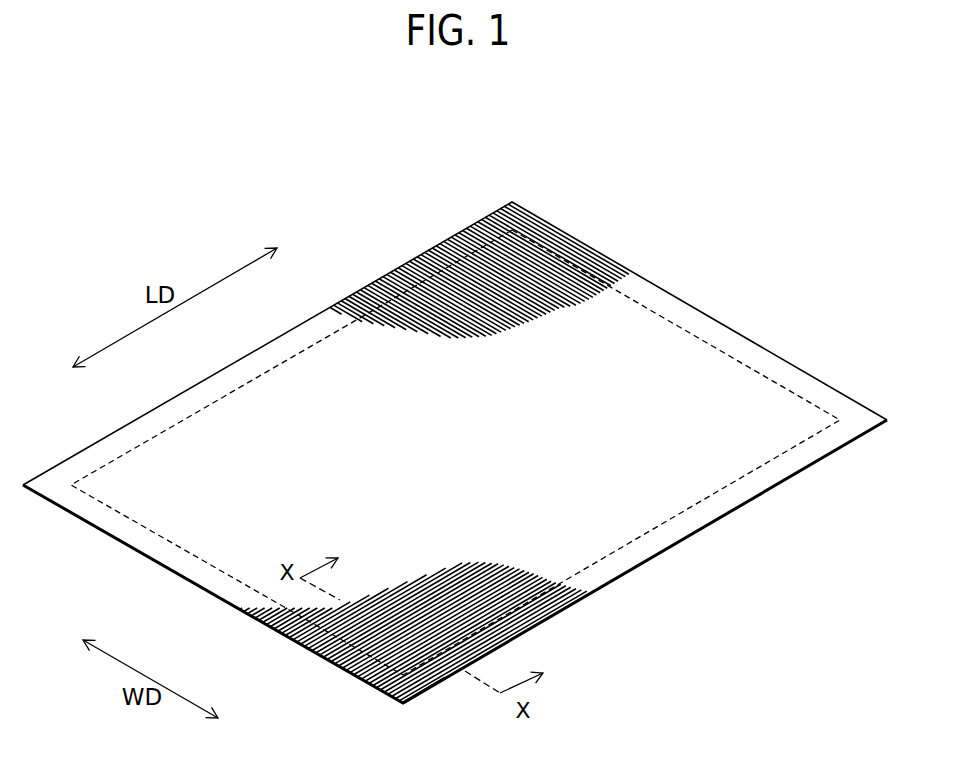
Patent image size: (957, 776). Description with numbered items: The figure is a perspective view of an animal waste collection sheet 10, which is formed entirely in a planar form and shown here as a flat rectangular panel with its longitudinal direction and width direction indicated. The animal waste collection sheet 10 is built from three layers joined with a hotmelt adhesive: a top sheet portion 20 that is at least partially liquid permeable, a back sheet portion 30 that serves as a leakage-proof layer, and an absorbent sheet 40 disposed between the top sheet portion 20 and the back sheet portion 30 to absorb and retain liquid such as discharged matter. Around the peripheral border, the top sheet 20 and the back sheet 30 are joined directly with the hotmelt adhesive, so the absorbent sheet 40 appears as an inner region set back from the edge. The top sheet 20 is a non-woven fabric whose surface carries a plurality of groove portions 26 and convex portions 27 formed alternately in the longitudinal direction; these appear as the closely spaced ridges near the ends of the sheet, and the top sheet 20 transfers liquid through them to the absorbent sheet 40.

The animal waste collection sheet 10 is at (328, 198).
The top sheet portion 20 is at (722, 503).
The groove portions 26 is at (400, 697).
The convex portions 27 is at (357, 673).
The back sheet portion 30 is at (673, 523).
The absorbent sheet 40 is at (242, 571).